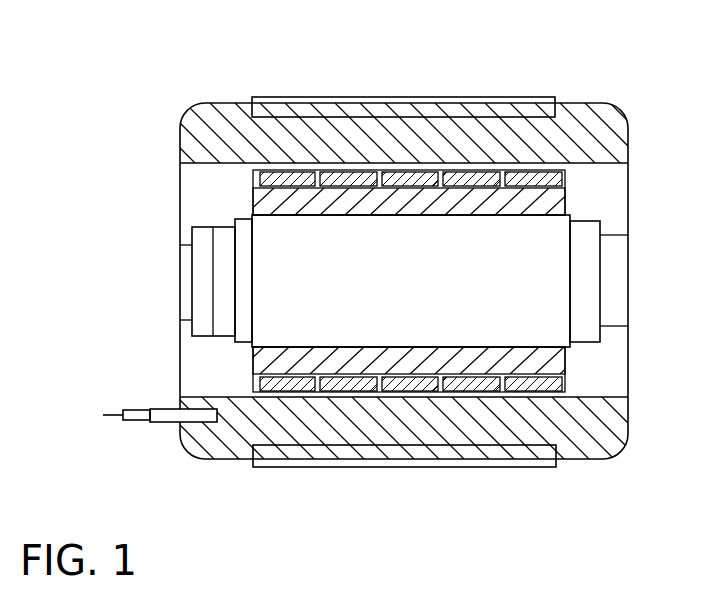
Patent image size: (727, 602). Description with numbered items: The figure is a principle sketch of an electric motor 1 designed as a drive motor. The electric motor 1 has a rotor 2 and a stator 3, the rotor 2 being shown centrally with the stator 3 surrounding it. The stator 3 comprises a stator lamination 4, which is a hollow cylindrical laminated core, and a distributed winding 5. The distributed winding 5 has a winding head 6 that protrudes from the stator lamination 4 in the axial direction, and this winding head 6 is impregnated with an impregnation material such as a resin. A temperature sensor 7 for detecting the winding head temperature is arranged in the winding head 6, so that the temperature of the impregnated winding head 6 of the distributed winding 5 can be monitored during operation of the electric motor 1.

The electric motor 1 is at (103, 62).
The rotor 2 is at (542, 267).
The stator 3 is at (173, 88).
The stator lamination 4 is at (511, 103).
The distributed winding 5 is at (443, 127).
The winding head 6 is at (202, 439).
The temperature sensor 7 is at (140, 412).